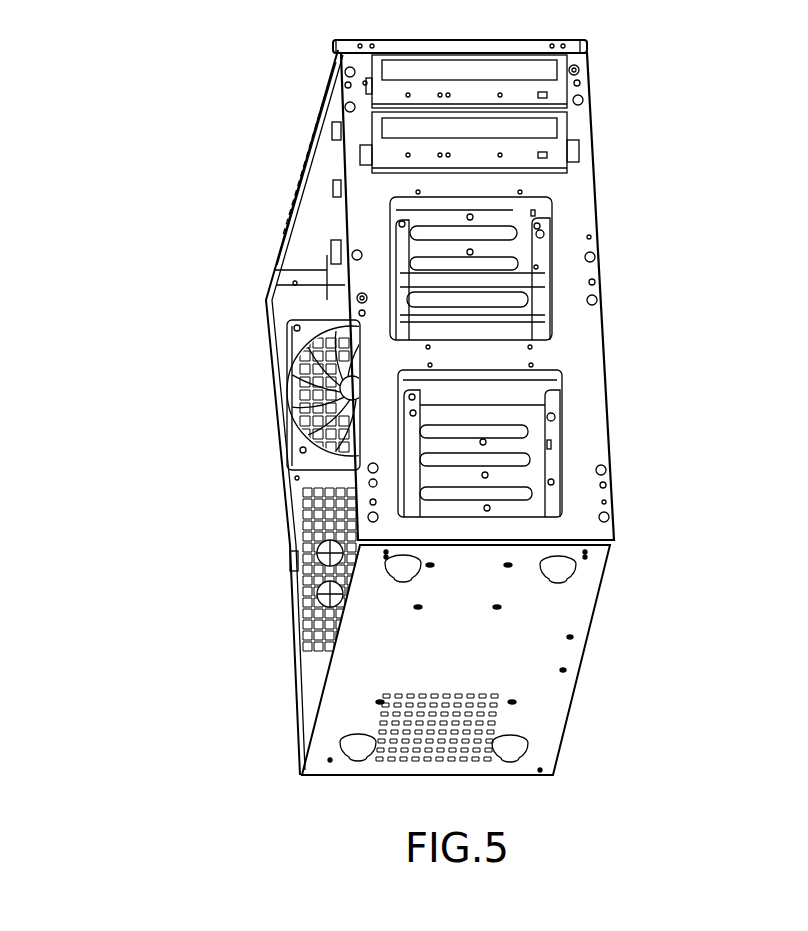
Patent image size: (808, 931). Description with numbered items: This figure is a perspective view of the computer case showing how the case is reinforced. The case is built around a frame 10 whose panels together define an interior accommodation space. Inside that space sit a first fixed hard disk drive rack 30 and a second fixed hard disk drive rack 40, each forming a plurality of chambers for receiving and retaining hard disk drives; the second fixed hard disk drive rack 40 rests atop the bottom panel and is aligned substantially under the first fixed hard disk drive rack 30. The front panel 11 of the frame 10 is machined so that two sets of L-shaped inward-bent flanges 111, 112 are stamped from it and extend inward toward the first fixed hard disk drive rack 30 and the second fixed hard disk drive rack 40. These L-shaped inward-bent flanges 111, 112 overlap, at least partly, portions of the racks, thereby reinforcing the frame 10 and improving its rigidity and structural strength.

The frame 10 is at (277, 450).
The front panel 11 is at (585, 342).
The L-shaped inward-bent flange 111 is at (547, 318).
The L-shaped inward-bent flange 112 is at (398, 242).
The first fixed hard disk drive rack 30 is at (522, 253).
The second fixed hard disk drive rack 40 is at (552, 478).